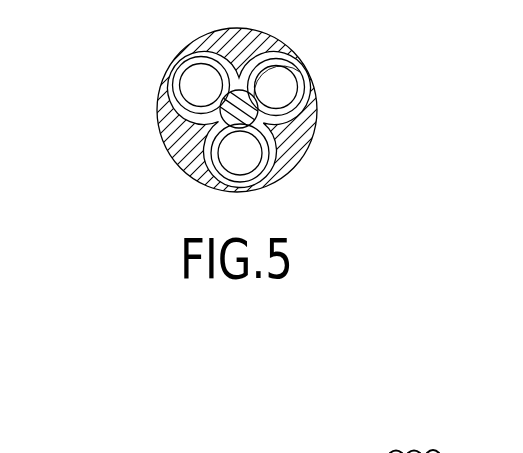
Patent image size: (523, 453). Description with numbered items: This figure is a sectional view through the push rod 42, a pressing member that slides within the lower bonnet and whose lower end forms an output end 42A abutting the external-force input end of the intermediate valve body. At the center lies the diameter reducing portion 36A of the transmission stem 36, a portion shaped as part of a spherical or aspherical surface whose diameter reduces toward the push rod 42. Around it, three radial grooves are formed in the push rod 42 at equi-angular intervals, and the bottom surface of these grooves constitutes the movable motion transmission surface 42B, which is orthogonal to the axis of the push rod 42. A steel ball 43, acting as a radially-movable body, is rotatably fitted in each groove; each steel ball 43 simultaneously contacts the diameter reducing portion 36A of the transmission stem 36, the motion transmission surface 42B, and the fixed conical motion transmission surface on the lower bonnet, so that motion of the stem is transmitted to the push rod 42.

The push rod 42 is at (293, 146).
The output end 42A is at (302, 80).
The motion transmission surface 42B is at (180, 68).
The steel ball 43 is at (197, 90).
The diameter reducing portion 36A is at (167, 139).
The transmission stem 36 is at (232, 116).